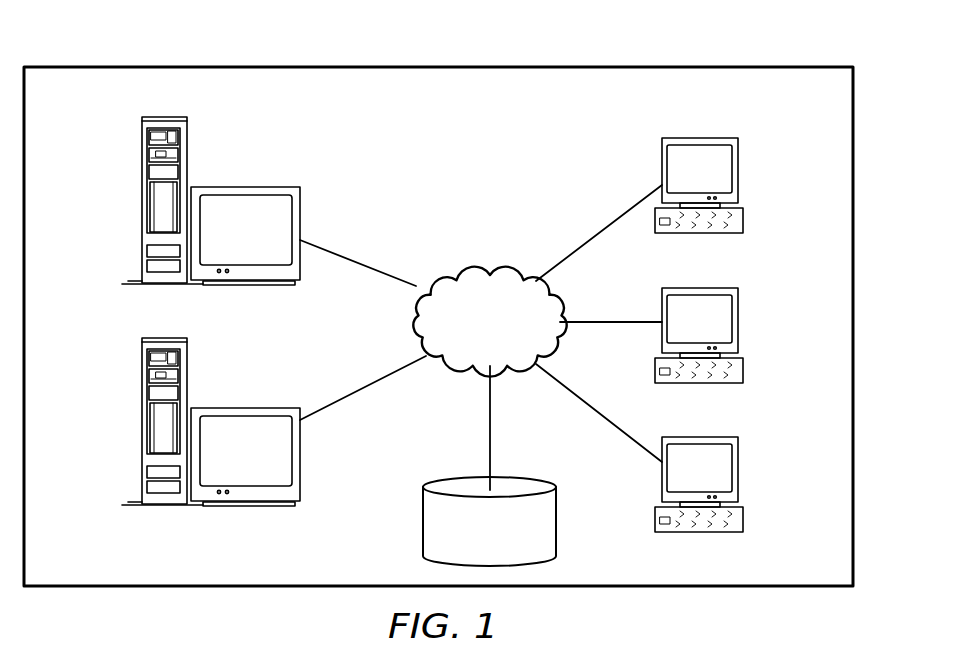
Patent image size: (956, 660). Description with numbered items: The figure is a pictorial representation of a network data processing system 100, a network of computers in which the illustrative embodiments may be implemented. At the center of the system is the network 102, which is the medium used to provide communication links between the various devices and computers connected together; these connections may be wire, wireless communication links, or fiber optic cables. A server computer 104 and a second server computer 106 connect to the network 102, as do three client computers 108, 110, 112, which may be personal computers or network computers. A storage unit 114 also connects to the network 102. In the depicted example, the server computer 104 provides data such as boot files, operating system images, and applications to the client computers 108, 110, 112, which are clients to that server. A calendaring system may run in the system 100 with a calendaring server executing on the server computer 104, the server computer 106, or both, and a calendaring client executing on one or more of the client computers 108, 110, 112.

The network data processing system 100 is at (579, 63).
The network 102 is at (457, 271).
The server computer 104 is at (142, 200).
The server computer 106 is at (142, 421).
The client computer 108 is at (740, 168).
The client computer 110 is at (740, 318).
The client computer 112 is at (740, 470).
The storage unit 114 is at (423, 532).